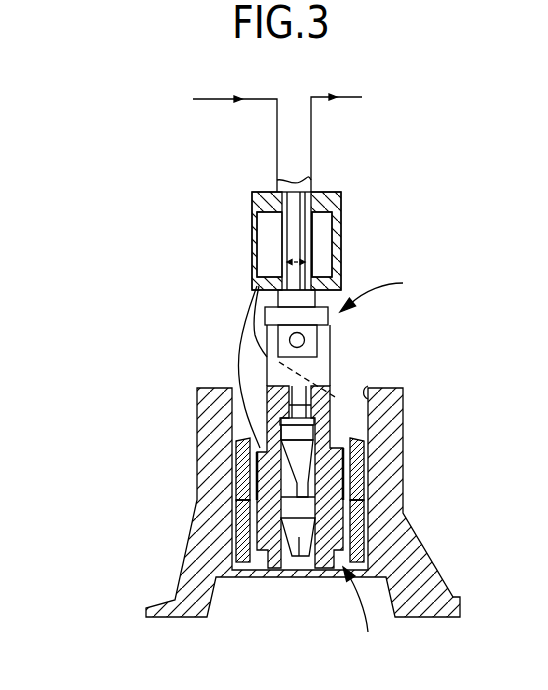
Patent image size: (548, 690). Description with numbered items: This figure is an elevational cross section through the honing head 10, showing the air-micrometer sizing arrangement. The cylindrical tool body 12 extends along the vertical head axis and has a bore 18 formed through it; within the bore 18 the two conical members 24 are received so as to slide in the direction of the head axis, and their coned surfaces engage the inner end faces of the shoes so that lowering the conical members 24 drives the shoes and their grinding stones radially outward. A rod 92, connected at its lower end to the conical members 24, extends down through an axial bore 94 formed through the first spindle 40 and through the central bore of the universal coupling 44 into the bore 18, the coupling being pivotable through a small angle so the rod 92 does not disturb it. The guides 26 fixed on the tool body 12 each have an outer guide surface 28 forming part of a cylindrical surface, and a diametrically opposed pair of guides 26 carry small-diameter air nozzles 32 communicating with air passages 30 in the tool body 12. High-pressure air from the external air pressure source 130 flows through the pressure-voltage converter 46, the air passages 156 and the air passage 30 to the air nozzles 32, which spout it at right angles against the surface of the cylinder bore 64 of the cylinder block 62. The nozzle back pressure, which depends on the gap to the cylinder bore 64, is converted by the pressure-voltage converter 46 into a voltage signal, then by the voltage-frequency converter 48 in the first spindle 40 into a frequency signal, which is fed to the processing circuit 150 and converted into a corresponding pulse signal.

The honing head 10 is at (317, 526).
The tool body 12 is at (317, 366).
The bore 18 is at (299, 565).
The conical members 24 is at (300, 452).
The guides 26 is at (240, 532).
The outer guide surface 28 is at (236, 492).
The air passages 30 is at (236, 470).
The air nozzles 32 is at (236, 504).
The first spindle 40 is at (260, 202).
The universal coupling 44 is at (347, 327).
The pressure-voltage converter 46 is at (268, 249).
The voltage-frequency converter 48 is at (320, 246).
The cylinder block 62 is at (432, 590).
The cylinder bore 64 is at (368, 386).
The rod 92 is at (293, 218).
The axial bore 94 is at (297, 230).
The external air pressure source 130 is at (147, 137).
The processing circuit 150 is at (419, 133).
The air passages 156 is at (242, 326).